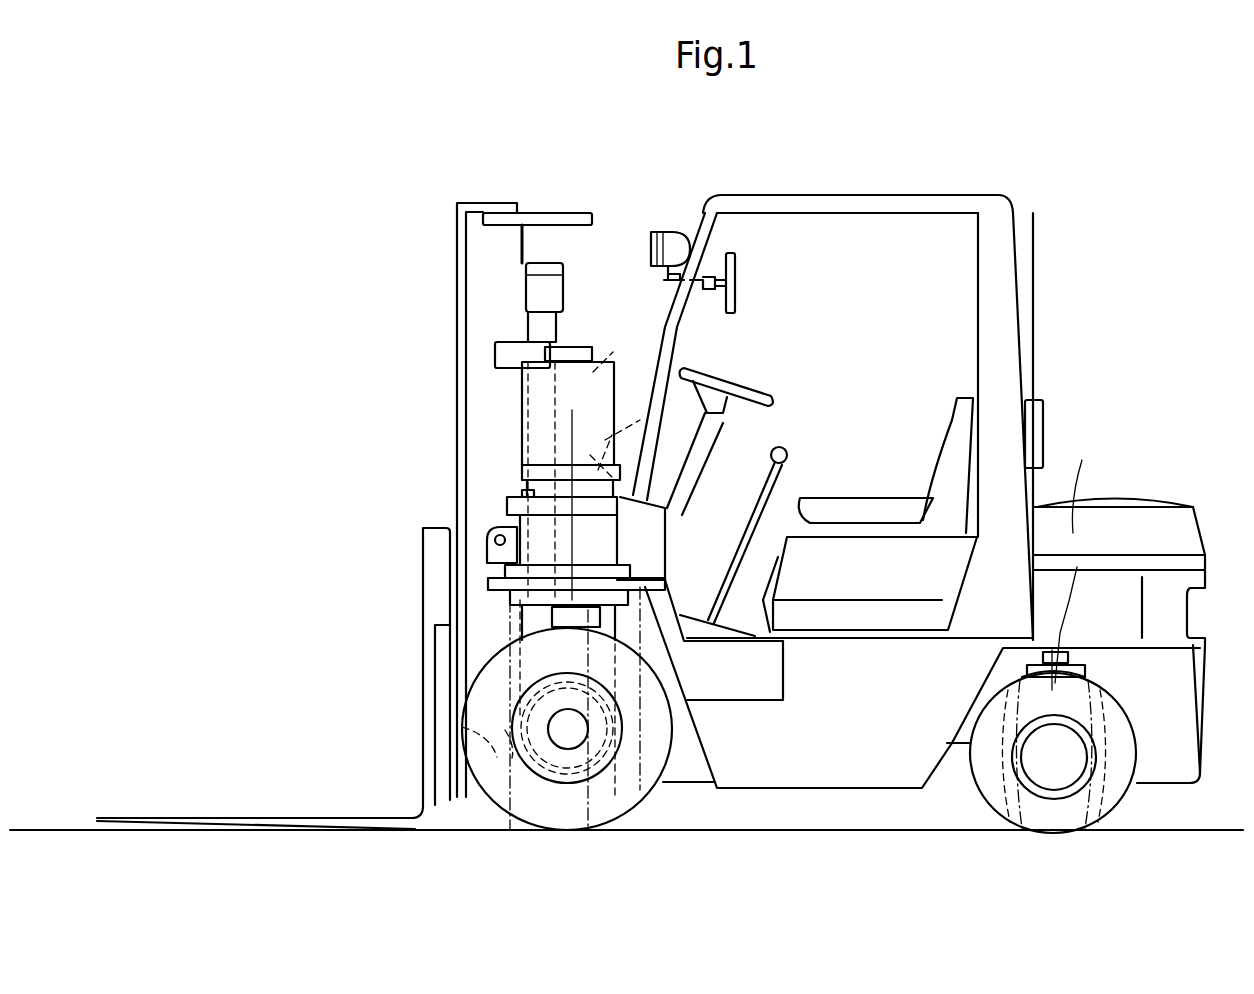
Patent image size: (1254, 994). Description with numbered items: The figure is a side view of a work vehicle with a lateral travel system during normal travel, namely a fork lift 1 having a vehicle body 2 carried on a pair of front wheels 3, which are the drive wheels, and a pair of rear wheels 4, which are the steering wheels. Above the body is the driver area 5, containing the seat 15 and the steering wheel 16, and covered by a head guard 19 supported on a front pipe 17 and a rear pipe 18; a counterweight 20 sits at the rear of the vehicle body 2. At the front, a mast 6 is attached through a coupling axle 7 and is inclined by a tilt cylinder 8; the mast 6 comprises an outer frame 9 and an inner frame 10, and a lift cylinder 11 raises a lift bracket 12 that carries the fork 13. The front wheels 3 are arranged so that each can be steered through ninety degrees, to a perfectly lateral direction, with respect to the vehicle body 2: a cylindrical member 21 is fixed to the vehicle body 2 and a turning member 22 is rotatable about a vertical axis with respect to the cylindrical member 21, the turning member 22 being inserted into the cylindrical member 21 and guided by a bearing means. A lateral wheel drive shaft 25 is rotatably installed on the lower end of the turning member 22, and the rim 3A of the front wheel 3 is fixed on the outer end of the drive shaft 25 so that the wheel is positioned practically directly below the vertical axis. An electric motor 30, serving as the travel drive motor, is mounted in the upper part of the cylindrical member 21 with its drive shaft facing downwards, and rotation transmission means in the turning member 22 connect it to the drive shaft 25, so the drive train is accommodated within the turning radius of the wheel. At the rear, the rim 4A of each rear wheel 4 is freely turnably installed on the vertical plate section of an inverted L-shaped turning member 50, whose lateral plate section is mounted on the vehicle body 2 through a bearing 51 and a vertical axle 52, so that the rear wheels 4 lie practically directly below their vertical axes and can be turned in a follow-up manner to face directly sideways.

The fork lift 1 is at (858, 558).
The vehicle body 2 is at (736, 774).
The front wheels 3 is at (563, 820).
The rims 3A is at (548, 775).
The rear wheels 4 is at (1057, 820).
The rims 4A is at (1062, 770).
The driver area 5 is at (820, 386).
The mast 6 is at (458, 500).
The coupling axle 7 is at (497, 760).
The tilt cylinder 8 is at (628, 512).
The outer frame 9 is at (477, 452).
The inner frame 10 is at (456, 490).
The lift cylinder 11 is at (567, 393).
The lift bracket 12 is at (438, 628).
The fork 13 is at (317, 817).
The seat 15 is at (894, 505).
The steering wheel 16 is at (751, 392).
The front pipe 17 is at (676, 330).
The rear pipe 18 is at (969, 426).
The head guard 19 is at (899, 200).
The counterweight 20 is at (1137, 530).
The cylindrical member 21 is at (533, 530).
The turning members 22 is at (500, 605).
The lateral wheel drive shaft 25 is at (587, 780).
The electric motor 30 is at (520, 420).
The turning members 50 is at (1088, 668).
The bearing 51 is at (1068, 652).
The vertical axle 52 is at (1096, 553).